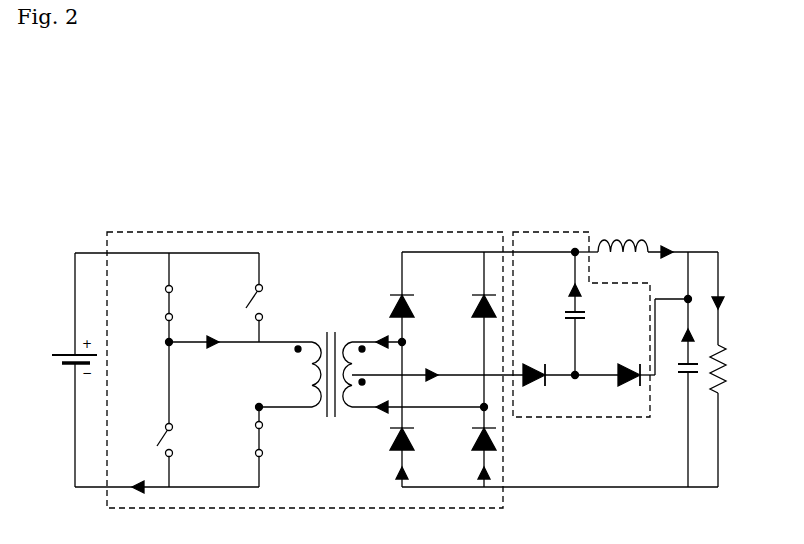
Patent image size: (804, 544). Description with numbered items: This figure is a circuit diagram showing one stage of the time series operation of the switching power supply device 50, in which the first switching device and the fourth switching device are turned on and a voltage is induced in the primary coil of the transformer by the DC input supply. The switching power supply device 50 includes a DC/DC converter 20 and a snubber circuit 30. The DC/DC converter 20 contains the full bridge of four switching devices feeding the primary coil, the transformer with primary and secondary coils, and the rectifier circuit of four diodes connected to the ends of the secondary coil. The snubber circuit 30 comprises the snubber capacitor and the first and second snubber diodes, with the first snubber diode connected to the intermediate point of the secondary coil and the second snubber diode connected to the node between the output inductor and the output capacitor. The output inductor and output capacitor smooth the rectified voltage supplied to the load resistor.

The DC/DC converter 20 is at (365, 232).
The snubber circuit 30 is at (535, 232).
The switching power supply device 50 is at (672, 169).